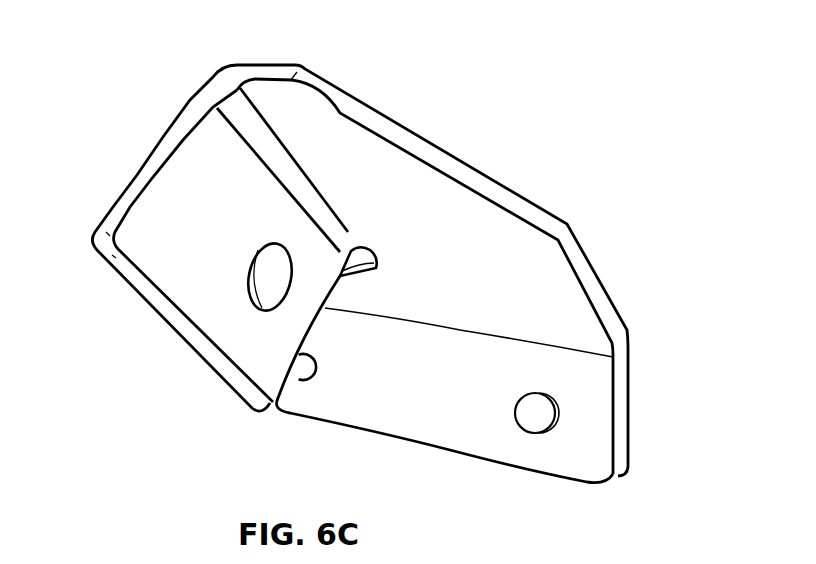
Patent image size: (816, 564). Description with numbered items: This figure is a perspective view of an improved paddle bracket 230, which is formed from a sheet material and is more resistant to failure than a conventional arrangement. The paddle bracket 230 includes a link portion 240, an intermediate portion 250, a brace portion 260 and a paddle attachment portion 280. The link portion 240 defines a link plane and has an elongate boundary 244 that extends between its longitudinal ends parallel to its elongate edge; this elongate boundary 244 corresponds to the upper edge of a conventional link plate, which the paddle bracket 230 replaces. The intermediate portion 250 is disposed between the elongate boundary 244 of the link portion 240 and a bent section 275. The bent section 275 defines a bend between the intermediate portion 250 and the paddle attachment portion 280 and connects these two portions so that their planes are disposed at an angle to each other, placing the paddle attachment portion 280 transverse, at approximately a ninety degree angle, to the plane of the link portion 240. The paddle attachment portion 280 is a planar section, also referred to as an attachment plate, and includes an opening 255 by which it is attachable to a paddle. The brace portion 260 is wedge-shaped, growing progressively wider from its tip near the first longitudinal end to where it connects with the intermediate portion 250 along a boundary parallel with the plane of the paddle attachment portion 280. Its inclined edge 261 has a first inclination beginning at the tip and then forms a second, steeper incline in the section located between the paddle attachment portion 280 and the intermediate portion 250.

The paddle bracket 230 is at (440, 98).
The bent section 275 is at (225, 79).
The paddle attachment portion 280 is at (172, 164).
The intermediate portion 250 is at (517, 263).
The elongate boundary 244 is at (617, 355).
The link portion 240 is at (472, 437).
The opening 255 is at (267, 280).
The brace portion 260 is at (343, 292).
The inclined edge 261 is at (363, 272).